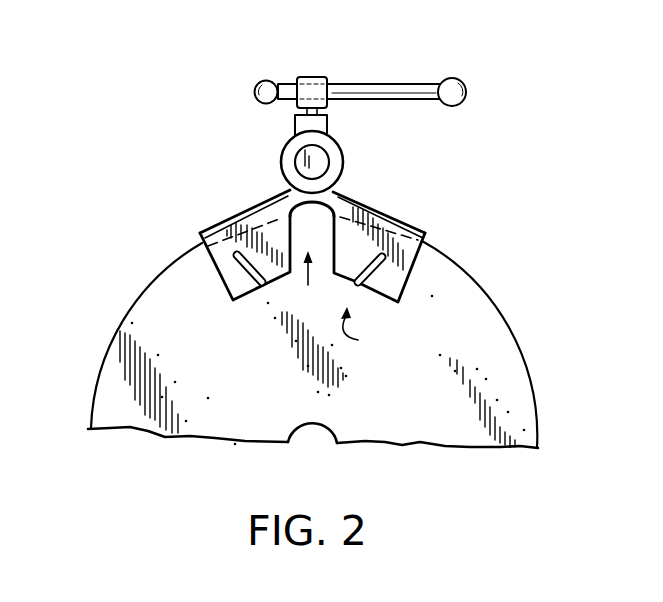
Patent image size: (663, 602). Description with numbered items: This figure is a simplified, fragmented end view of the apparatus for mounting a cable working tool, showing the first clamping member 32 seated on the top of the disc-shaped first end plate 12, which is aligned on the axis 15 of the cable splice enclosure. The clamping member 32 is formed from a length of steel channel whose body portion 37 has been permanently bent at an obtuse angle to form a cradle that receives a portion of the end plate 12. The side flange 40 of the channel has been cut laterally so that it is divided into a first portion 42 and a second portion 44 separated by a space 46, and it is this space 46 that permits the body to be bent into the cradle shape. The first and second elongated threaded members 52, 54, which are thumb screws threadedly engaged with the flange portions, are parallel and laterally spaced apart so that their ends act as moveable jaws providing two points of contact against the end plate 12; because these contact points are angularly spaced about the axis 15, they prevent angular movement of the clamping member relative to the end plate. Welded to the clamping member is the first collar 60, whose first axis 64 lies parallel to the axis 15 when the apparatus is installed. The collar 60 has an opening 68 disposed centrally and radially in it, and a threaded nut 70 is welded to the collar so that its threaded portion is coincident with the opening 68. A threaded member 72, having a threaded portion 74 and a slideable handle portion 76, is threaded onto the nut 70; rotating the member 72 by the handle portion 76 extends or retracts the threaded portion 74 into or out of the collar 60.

The first end plate 12 is at (497, 348).
The axis 15 is at (312, 442).
The first clamping member 32 is at (390, 217).
The body portion 37 is at (250, 210).
The second side flange 40 is at (364, 331).
The first portion 42 is at (208, 247).
The second portion 44 is at (418, 250).
The space 46 is at (311, 284).
The first elongated threaded member 52 is at (237, 283).
The second elongated threaded member 54 is at (398, 300).
The first collar 60 is at (340, 173).
The first axis 64 is at (313, 159).
The opening 68 is at (290, 125).
The threaded nut 70 is at (328, 123).
The threaded member 72 is at (310, 77).
The threaded portion 74 is at (303, 112).
The handle portion 76 is at (370, 85).